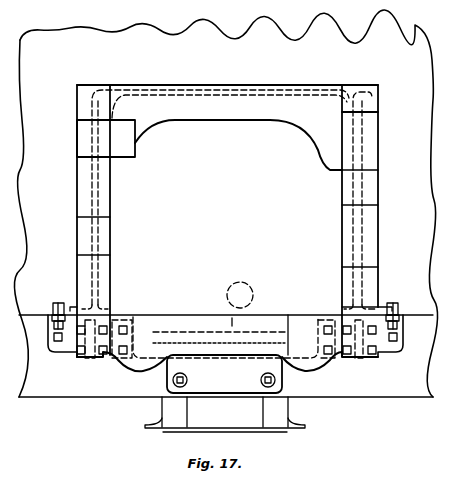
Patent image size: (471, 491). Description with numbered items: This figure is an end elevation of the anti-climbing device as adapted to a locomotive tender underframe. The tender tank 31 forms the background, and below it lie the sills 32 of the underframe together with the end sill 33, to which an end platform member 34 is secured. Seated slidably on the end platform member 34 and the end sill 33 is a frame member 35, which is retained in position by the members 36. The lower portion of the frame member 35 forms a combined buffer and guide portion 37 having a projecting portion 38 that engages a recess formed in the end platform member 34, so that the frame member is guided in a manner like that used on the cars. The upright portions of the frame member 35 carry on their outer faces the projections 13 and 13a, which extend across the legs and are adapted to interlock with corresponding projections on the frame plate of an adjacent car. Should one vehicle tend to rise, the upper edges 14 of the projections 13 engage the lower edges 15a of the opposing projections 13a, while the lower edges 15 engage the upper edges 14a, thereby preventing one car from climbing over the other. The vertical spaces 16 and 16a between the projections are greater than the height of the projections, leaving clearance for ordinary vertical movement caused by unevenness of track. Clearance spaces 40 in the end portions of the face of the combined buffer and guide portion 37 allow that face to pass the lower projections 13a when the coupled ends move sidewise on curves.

The tender tank 31 is at (225, 203).
The end sill 33 is at (226, 356).
The projections 13a is at (87, 143).
The upper edges 14a is at (100, 118).
The lower edges 15a is at (93, 158).
The frame member 35 is at (90, 188).
The vertical spaces 16a is at (105, 198).
The projections 13 is at (370, 97).
The upper edges 14 is at (378, 85).
The lower edges 15 is at (363, 112).
The vertical spaces 16 is at (365, 145).
The members 36 is at (71, 306).
The end platform member 34 is at (104, 358).
The combined buffer and guide portion 37 is at (165, 322).
The projecting portion 38 is at (234, 314).
The clearance spaces 40 is at (303, 327).
The sills 32 is at (162, 415).